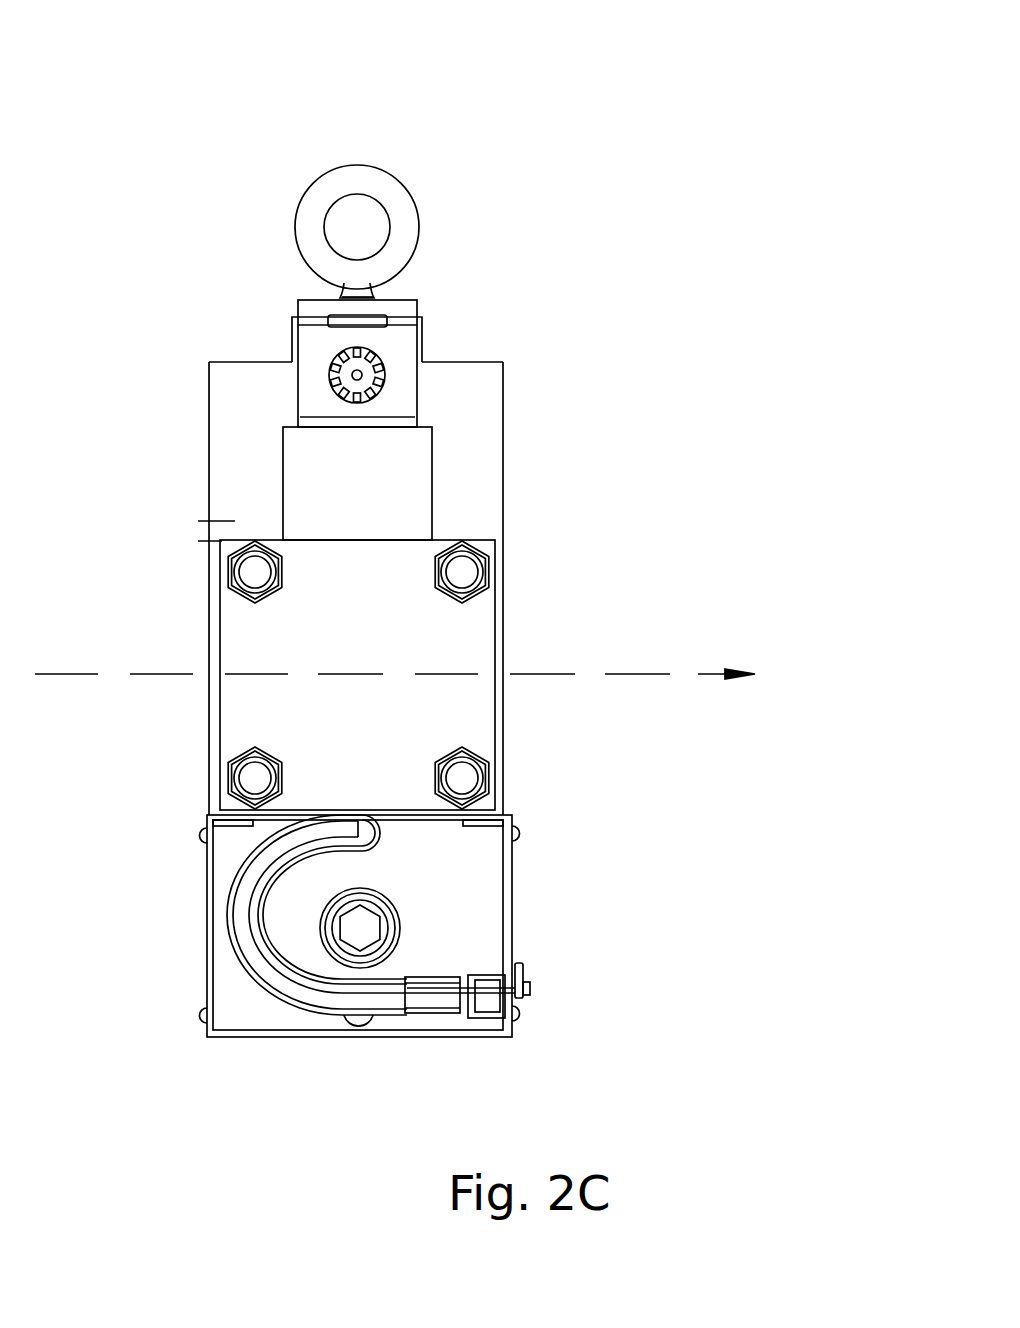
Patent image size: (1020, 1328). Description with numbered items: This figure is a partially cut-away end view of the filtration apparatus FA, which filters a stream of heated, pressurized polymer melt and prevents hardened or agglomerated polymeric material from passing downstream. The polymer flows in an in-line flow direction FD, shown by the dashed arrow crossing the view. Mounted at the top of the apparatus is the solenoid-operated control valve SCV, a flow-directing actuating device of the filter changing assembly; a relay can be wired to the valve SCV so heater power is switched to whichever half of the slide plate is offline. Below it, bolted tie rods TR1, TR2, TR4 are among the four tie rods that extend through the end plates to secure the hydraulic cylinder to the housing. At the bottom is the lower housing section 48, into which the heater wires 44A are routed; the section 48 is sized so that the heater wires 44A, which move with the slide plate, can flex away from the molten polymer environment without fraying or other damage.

The filtration apparatus FA is at (670, 201).
The solenoid-operated control valve SCV is at (418, 345).
The tie rod TR1 is at (255, 572).
The tie rod TR2 is at (97, 828).
The tie rod TR4 is at (462, 778).
The flow direction FD is at (648, 672).
The lower housing section 48 is at (205, 905).
The heater wires 44A is at (282, 1000).